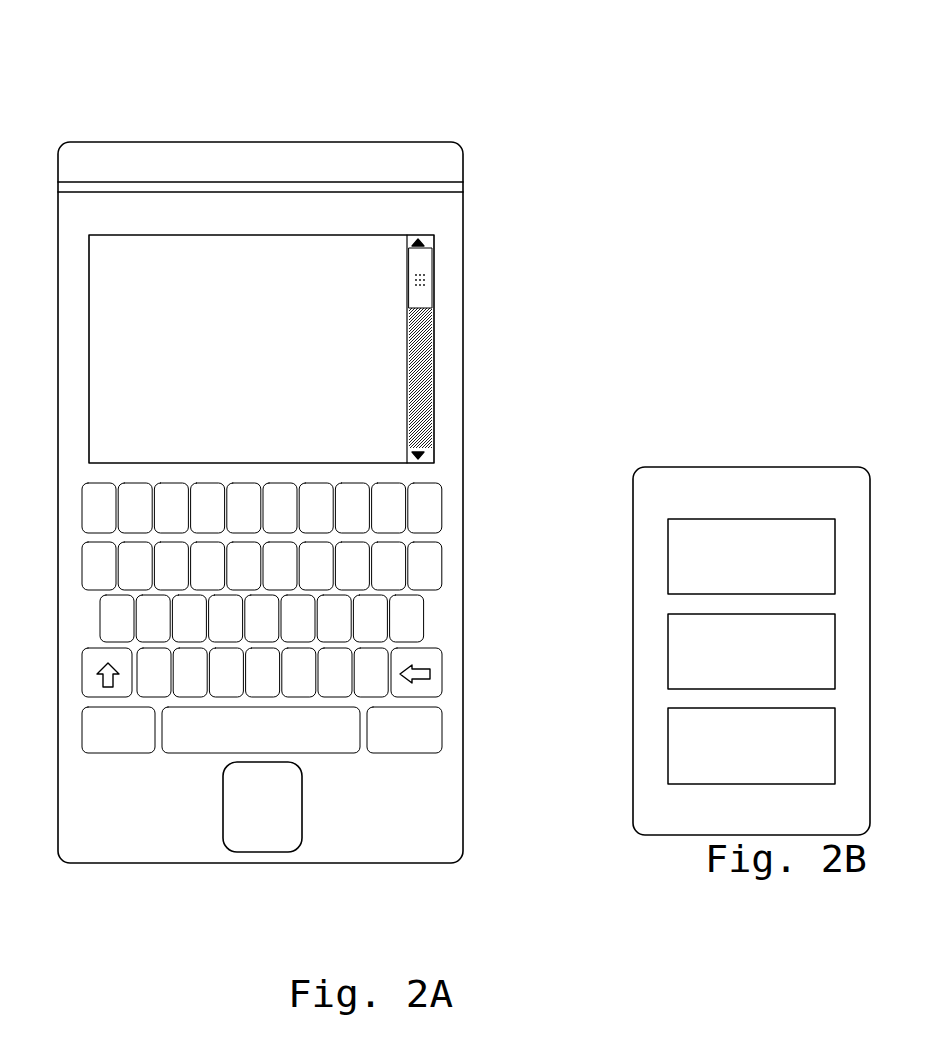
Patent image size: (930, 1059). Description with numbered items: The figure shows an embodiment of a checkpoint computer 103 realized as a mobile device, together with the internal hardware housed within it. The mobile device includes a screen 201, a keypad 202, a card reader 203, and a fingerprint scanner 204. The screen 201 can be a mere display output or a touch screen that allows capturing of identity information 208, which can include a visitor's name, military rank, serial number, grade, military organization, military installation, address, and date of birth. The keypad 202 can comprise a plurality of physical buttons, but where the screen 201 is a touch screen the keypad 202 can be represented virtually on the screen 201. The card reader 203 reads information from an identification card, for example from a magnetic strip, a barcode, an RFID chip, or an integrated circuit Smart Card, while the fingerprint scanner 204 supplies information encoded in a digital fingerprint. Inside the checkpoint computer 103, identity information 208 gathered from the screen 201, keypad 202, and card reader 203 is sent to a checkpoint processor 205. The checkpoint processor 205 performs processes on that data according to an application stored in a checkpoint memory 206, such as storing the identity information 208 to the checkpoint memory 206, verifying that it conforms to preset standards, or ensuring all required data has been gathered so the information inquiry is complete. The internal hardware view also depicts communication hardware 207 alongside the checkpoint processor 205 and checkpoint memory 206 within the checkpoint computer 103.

In FIG. 2A, the checkpoint computer 103 is at (342, 441).
In FIG. 2B, the checkpoint computer 103 is at (751, 635).
In FIG. 2A, the screen 201 is at (461, 349).
In FIG. 2A, the keypad 202 is at (324, 563).
In FIG. 2A, the card reader 203 is at (260, 139).
In FIG. 2A, the fingerprint scanner 204 is at (306, 849).
In FIG. 2B, the checkpoint processor 205 is at (751, 556).
In FIG. 2B, the checkpoint memory 206 is at (751, 651).
In FIG. 2B, the communication hardware 207 is at (751, 746).
In FIG. 2A, the identity information 208 is at (327, 330).